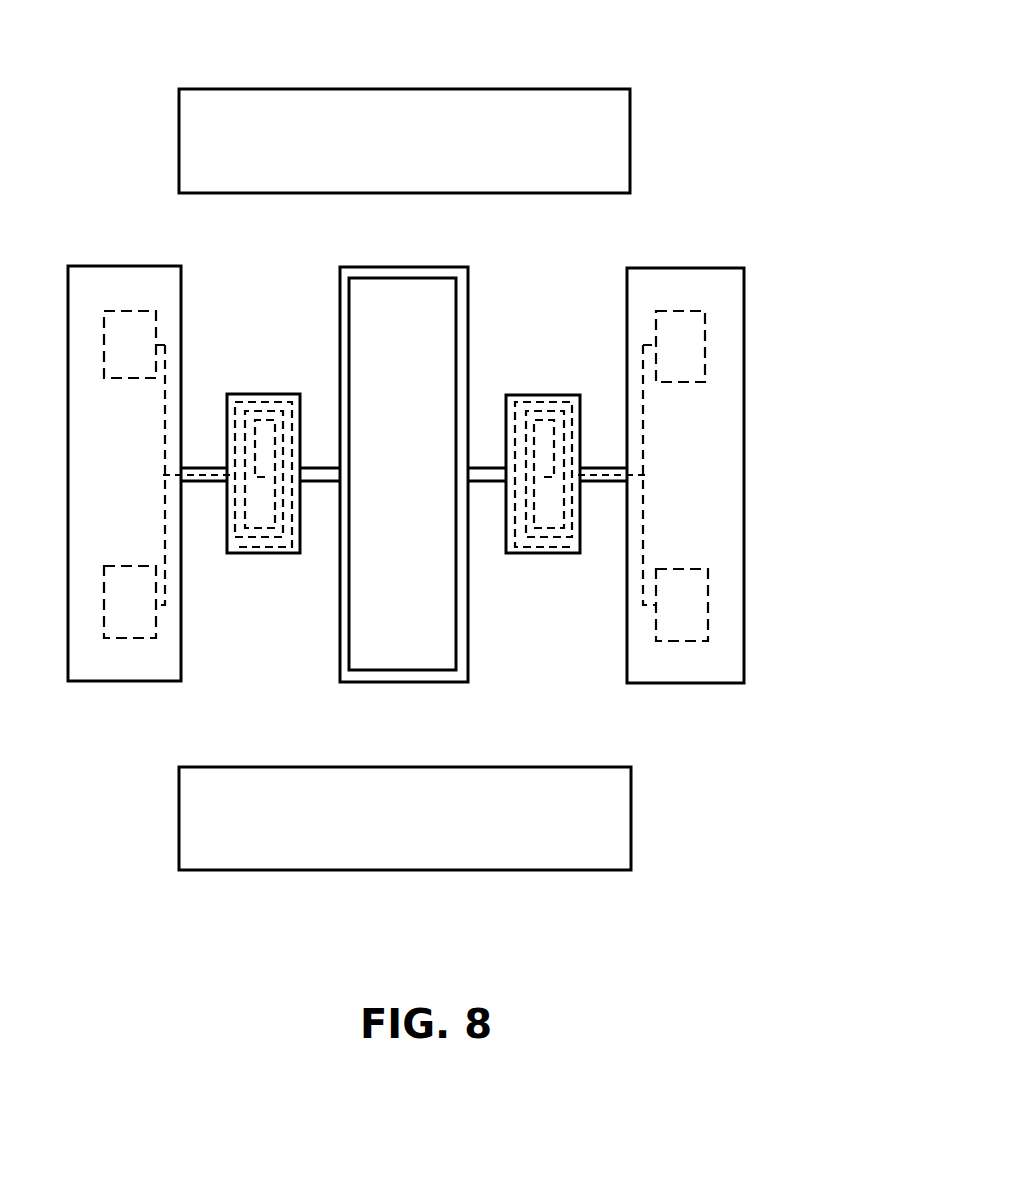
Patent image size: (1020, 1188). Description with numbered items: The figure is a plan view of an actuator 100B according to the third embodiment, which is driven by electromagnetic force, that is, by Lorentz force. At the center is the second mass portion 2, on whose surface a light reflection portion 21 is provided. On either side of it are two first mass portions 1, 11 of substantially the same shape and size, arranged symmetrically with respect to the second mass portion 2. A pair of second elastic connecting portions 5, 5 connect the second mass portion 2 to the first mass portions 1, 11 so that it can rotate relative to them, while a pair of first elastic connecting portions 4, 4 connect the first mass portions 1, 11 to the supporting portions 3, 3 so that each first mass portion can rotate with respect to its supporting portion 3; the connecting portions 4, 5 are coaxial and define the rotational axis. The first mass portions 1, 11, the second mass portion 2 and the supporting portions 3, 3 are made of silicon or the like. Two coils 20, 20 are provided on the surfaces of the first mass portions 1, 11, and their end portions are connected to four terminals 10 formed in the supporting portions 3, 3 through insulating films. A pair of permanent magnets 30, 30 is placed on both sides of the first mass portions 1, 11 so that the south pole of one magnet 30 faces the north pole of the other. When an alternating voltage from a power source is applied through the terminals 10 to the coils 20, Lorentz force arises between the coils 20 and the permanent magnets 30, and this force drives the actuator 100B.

The actuator 100B is at (683, 113).
The permanent magnet 30 is at (197, 142).
The supporting portion 3 is at (127, 665).
The terminal 10 is at (118, 342).
The first elastic connecting portion 4 is at (206, 484).
The second elastic connecting portion 5 is at (315, 467).
The first mass portion 11 is at (259, 554).
The first mass portion 1 is at (537, 554).
The coil 20 is at (262, 402).
The second mass portion 2 is at (435, 272).
The light reflection portion 21 is at (427, 653).